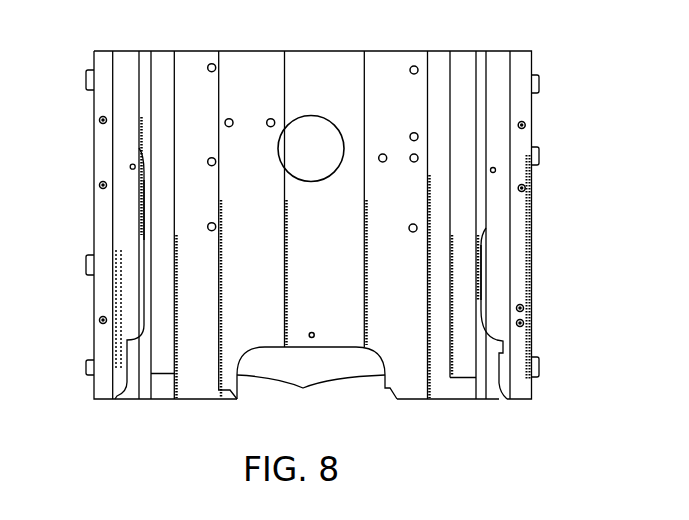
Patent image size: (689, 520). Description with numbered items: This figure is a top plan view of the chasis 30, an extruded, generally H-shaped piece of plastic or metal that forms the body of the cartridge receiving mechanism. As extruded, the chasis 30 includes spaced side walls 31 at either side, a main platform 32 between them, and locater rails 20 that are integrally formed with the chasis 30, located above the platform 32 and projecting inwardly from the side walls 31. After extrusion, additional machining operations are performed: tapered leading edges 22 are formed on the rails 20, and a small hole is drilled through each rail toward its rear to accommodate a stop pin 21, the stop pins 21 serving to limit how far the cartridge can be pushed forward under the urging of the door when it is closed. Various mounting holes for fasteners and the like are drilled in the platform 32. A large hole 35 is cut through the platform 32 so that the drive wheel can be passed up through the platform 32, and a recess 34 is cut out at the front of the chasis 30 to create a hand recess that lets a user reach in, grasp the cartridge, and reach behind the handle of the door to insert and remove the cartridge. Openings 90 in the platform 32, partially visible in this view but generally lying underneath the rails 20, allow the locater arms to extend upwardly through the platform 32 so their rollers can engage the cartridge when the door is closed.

The locater rails 20 is at (128, 78).
The stop pin 21 is at (138, 153).
The tapered leading edges 22 is at (137, 337).
The chasis 30 is at (541, 211).
The side walls 31 is at (93, 295).
The main platform 32 is at (334, 244).
The recess 34 is at (303, 388).
The large hole 35 is at (325, 160).
The openings 90 is at (145, 208).